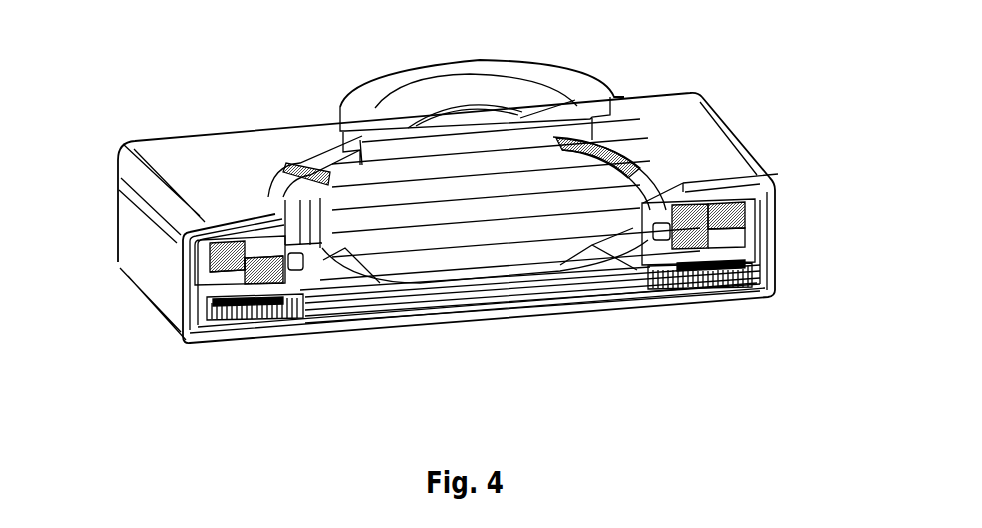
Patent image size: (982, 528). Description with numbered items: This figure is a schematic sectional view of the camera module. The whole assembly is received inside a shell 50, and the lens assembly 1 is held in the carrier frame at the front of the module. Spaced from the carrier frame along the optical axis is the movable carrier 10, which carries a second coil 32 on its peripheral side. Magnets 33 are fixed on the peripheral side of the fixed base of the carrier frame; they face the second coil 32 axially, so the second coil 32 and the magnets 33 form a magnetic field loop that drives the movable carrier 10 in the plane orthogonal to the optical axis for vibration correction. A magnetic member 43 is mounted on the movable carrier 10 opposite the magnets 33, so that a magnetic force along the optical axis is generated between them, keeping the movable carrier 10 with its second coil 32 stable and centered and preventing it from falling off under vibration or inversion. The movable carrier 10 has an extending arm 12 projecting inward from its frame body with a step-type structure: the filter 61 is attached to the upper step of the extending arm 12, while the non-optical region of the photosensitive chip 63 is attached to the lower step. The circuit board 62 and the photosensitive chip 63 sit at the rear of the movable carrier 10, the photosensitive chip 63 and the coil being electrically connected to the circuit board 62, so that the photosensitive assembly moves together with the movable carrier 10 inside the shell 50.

The lens assembly 1 is at (493, 123).
The shell 50 is at (198, 150).
The movable carrier 10 is at (235, 343).
The extending arm 12 is at (633, 300).
The second coil 32 is at (745, 292).
The magnets 33 is at (773, 253).
The magnetic member 43 is at (697, 293).
The filter 61 is at (463, 312).
The circuit board 62 is at (337, 325).
The photosensitive chip 63 is at (493, 316).